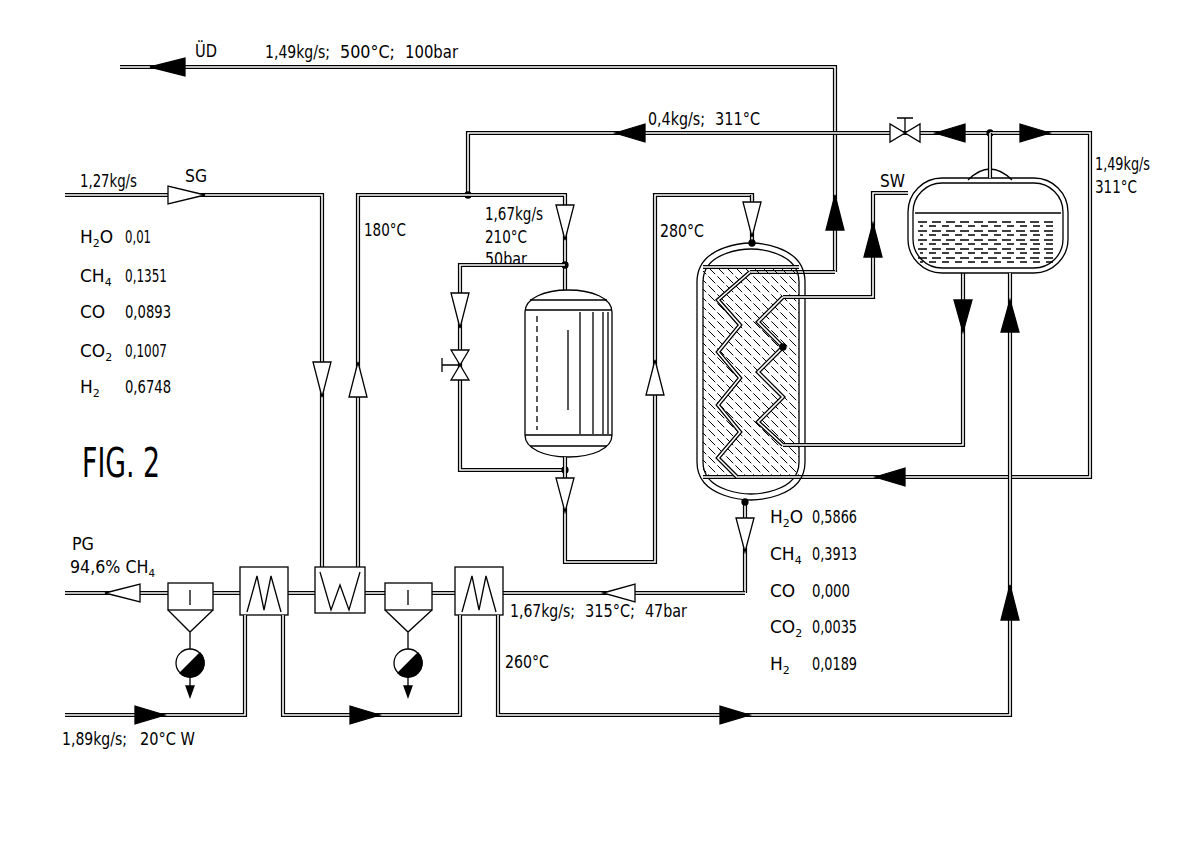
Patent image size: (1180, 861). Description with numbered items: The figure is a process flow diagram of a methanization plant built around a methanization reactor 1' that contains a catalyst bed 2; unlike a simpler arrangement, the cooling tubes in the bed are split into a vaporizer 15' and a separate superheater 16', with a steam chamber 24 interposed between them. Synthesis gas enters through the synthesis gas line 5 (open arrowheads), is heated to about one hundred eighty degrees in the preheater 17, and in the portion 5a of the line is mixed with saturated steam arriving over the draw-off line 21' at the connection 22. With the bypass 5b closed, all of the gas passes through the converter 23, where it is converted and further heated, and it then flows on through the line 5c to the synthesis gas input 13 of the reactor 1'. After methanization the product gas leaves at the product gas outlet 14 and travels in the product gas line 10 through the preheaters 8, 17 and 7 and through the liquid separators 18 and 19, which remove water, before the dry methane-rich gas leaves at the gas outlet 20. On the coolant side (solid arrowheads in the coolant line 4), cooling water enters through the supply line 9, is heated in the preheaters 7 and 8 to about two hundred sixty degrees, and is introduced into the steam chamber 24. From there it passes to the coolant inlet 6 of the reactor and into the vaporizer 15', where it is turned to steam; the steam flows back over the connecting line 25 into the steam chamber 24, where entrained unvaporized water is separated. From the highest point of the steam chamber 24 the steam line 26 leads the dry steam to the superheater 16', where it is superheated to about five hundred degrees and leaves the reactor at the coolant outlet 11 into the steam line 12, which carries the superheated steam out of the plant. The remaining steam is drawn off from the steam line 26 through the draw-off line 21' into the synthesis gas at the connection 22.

The methanization reactor 1' is at (771, 371).
The catalyst bed 2 is at (712, 420).
The coolant line 4 is at (320, 713).
The synthesis gas line 5 is at (322, 262).
The portion of the synthesis gas line 5a is at (360, 290).
The bypass 5b is at (458, 348).
The reactor feed line 5c is at (703, 194).
The coolant inlet 6 is at (808, 445).
The preheater 7 is at (262, 566).
The preheater 8 is at (485, 565).
The supply line 9 is at (92, 713).
The product gas line 10 is at (515, 593).
The coolant outlet 11 is at (813, 270).
The steam line 12 is at (318, 68).
The synthesis gas input 13 is at (756, 235).
The product gas outlet 14 is at (740, 508).
The vaporizer 15' is at (806, 371).
The superheater 16' is at (702, 374).
The preheater 17 is at (340, 565).
The liquid separator 18 is at (395, 583).
The liquid separator 19 is at (178, 583).
The gas outlet 20 is at (72, 596).
The draw-off line 21' is at (729, 148).
The connection 22 is at (466, 190).
The converter 23 is at (540, 348).
The steam chamber 24 is at (1040, 265).
The connecting line 25 is at (873, 275).
The steam line 26 is at (1058, 133).